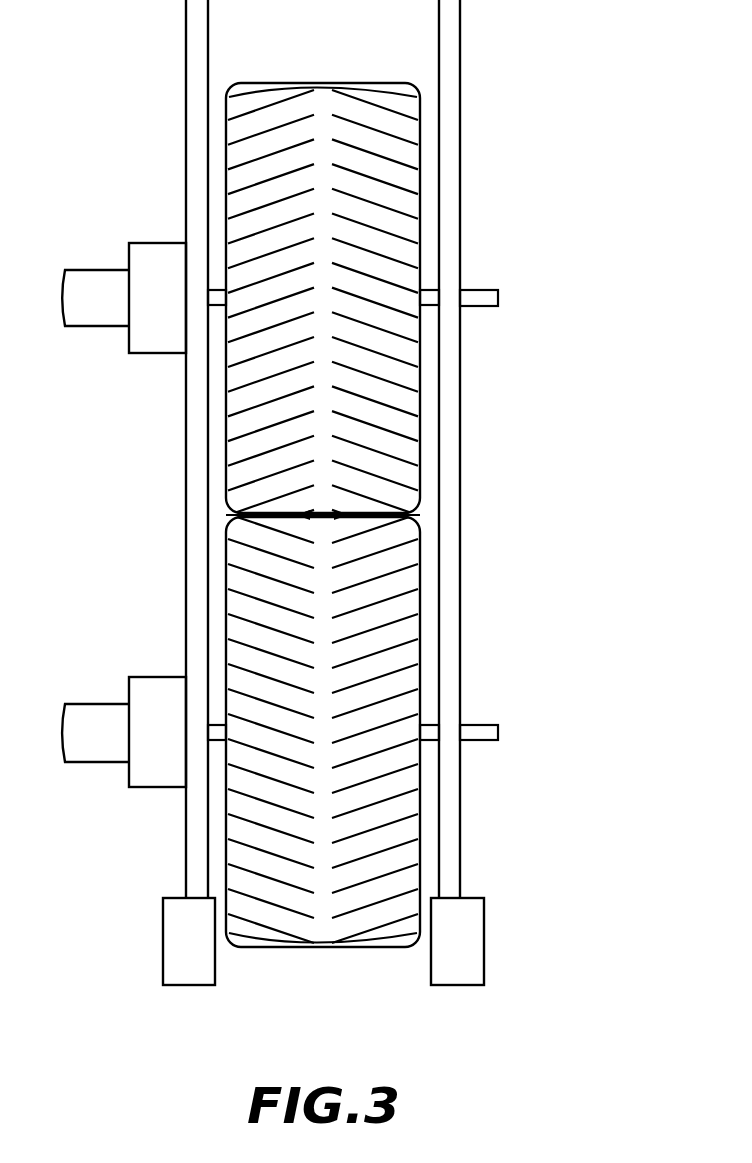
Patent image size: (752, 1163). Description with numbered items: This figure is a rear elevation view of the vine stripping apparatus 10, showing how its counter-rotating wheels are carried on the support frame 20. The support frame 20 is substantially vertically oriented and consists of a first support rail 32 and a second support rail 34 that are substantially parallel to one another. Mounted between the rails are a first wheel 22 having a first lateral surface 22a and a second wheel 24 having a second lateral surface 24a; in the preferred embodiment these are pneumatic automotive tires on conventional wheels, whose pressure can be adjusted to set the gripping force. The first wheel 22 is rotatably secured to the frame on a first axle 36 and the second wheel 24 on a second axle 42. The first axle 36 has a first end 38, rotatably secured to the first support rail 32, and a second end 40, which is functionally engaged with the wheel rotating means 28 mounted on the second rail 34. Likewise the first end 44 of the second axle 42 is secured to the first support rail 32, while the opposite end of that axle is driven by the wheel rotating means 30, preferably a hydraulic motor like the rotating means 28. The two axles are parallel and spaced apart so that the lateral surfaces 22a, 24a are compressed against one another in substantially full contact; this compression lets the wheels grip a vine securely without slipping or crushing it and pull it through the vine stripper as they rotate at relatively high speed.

The vine stripping apparatus 10 is at (85, 135).
The support frame 20 is at (177, 945).
The first wheel 22 is at (269, 278).
The first lateral surface 22a is at (313, 72).
The second wheel 24 is at (269, 766).
The second lateral surface 24a is at (313, 960).
The wheel rotating means 28 is at (148, 251).
The wheel rotating means 30 is at (148, 687).
The first support rail 32 is at (447, 475).
The second support rail 34 is at (197, 533).
The first axle 36 is at (494, 299).
The first end of first axle 38 is at (482, 293).
The second end of first axle 40 is at (215, 298).
The second axle 42 is at (494, 734).
The first end of second axle 44 is at (482, 728).